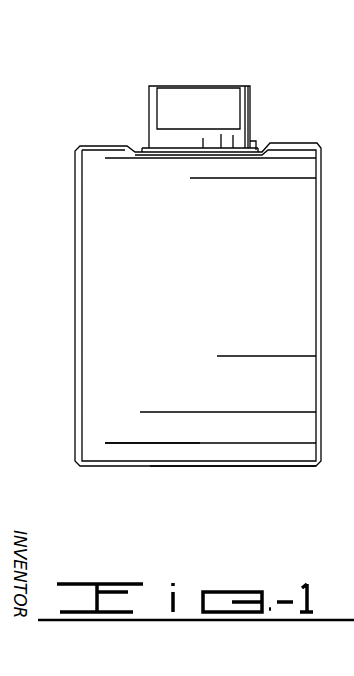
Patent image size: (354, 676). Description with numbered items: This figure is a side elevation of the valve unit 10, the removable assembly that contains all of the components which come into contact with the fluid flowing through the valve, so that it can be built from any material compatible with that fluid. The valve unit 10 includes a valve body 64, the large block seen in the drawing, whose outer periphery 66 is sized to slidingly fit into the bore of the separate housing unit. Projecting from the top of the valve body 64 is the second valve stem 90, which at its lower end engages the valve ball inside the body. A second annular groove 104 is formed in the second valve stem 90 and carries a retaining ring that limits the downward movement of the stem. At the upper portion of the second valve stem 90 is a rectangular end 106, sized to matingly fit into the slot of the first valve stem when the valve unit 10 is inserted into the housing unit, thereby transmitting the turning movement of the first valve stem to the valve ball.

The valve unit 10 is at (66, 137).
The valve body 64 is at (98, 439).
The outer periphery 66 is at (245, 468).
The second valve stem 90 is at (228, 138).
The second annular groove 104 is at (152, 147).
The rectangular end 106 is at (214, 93).